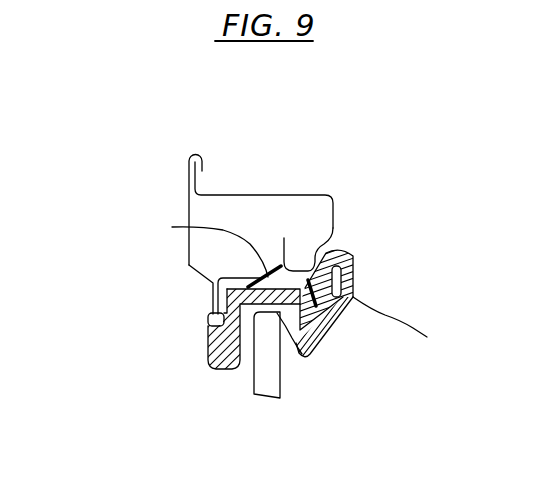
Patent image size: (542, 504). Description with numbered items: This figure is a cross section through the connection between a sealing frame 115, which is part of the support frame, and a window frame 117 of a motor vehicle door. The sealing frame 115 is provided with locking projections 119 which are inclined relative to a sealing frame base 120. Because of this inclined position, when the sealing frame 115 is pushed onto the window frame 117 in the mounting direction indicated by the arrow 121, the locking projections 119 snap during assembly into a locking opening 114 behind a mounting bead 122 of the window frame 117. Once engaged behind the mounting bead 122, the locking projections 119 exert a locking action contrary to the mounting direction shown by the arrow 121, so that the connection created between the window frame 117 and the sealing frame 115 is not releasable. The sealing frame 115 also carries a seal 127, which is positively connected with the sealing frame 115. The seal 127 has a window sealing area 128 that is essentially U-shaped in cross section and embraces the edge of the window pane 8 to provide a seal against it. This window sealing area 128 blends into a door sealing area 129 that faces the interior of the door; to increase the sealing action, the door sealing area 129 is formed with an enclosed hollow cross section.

The window pane 8 is at (267, 378).
The locking opening 114 is at (285, 240).
The sealing frame 115 is at (207, 318).
The window frame 117 is at (253, 194).
The locking projections 119 is at (172, 227).
The sealing frame base 120 is at (212, 299).
The arrow indicating the mounting direction 121 is at (401, 273).
The mounting bead 122 is at (336, 240).
The seal 127 is at (327, 336).
The window sealing area 128 is at (304, 357).
The door sealing area 129 is at (408, 323).